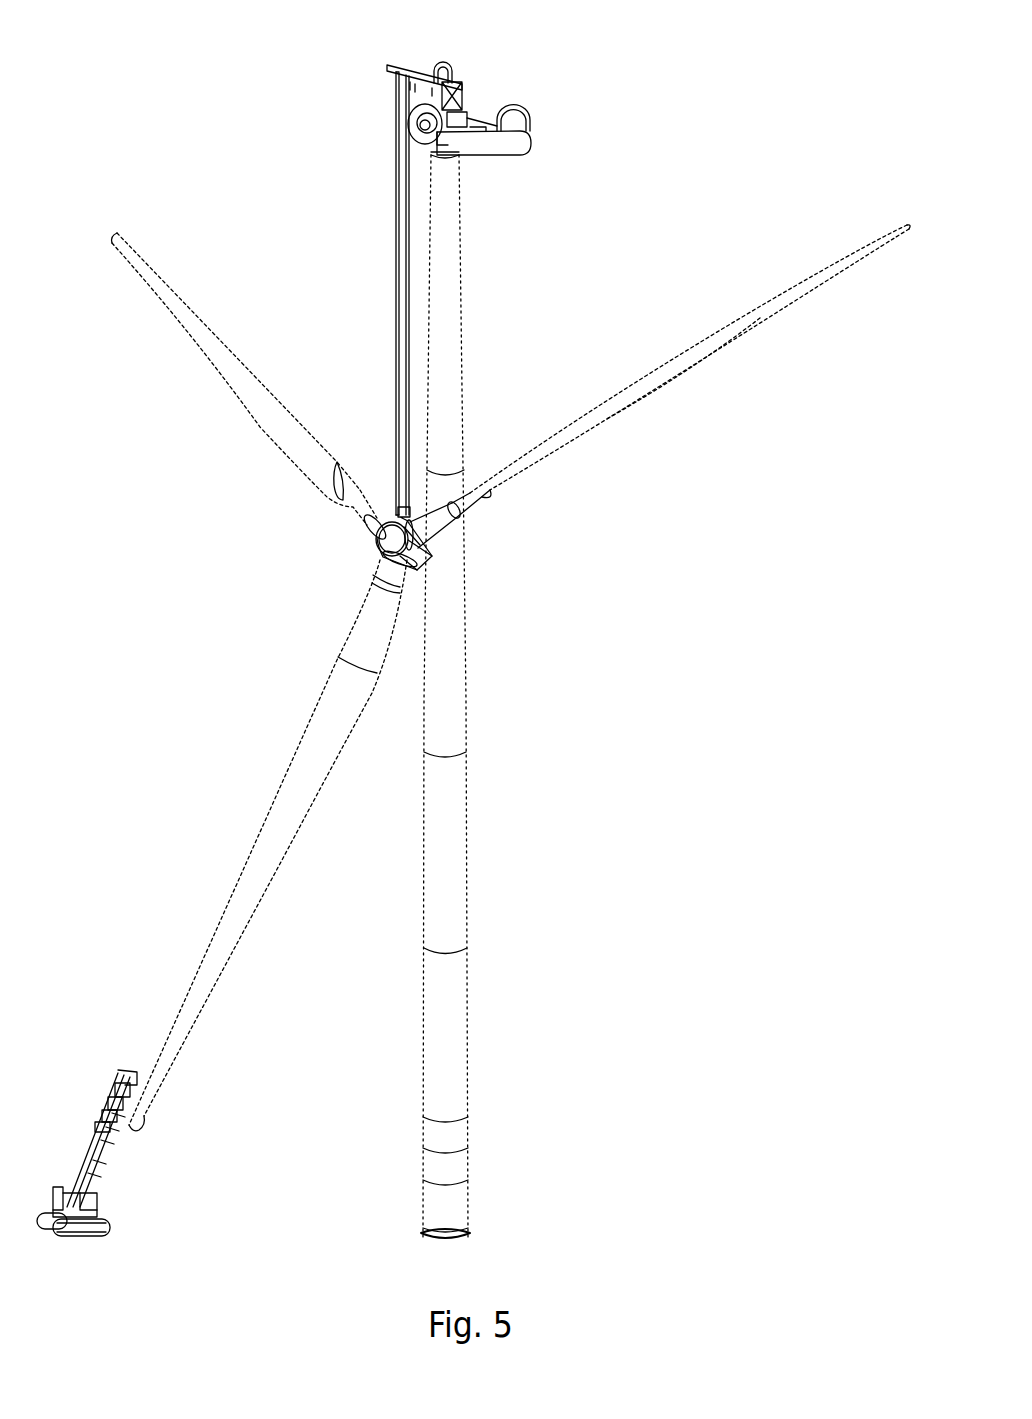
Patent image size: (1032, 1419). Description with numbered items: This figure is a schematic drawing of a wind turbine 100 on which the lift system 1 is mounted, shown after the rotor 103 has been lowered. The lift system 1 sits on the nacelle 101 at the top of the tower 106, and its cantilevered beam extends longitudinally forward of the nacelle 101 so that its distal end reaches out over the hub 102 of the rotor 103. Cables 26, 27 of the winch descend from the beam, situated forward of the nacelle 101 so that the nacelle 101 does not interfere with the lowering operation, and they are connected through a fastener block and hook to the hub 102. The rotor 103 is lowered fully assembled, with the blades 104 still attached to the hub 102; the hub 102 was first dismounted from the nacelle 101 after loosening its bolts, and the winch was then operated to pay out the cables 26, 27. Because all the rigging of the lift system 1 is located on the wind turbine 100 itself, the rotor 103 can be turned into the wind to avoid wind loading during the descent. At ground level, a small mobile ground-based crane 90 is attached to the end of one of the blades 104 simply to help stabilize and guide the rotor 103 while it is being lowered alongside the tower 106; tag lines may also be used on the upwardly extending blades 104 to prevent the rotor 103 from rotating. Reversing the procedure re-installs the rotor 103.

The lift system 1 is at (426, 52).
The cable 26 is at (400, 232).
The cable 27 is at (404, 298).
The mobile ground-based crane 90 is at (81, 1155).
The wind turbine 100 is at (595, 786).
The nacelle 101 is at (520, 135).
The hub 102 is at (381, 546).
The rotor 103 is at (322, 516).
The blades 104 is at (580, 428).
The tower 106 is at (452, 718).